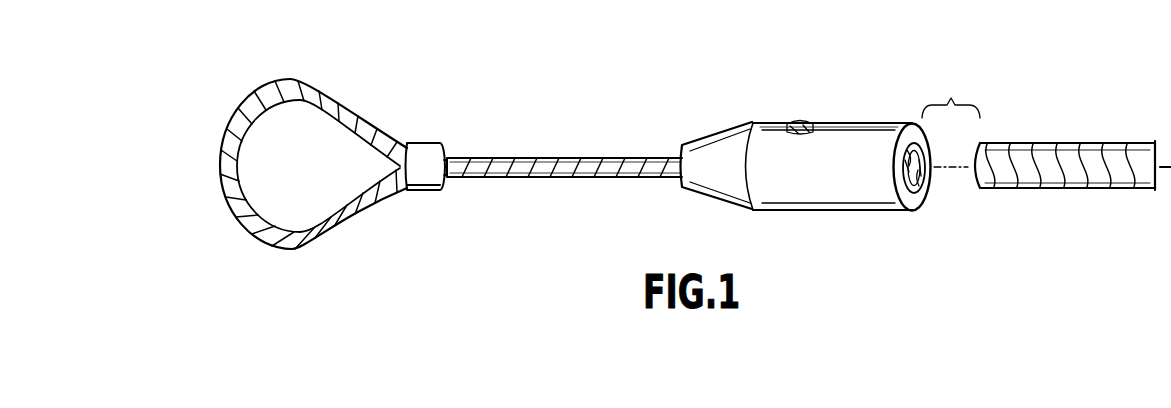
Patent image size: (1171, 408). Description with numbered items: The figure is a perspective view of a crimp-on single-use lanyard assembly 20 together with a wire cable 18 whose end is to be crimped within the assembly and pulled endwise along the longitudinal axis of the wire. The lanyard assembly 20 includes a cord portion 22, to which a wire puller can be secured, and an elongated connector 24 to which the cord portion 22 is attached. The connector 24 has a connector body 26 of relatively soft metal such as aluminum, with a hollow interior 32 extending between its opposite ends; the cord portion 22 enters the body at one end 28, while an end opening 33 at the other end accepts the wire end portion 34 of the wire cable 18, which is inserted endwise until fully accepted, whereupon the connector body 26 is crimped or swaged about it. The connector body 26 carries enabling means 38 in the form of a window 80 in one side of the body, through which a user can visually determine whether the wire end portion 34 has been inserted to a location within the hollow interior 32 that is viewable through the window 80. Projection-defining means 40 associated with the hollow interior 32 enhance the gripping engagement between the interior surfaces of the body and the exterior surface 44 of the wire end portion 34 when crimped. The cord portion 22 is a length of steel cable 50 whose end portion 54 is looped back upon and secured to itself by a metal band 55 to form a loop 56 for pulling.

The wire cable 18 is at (1117, 143).
The lanyard assembly 20 is at (783, 144).
The cord portion 22 is at (508, 157).
The connector 24 is at (873, 210).
The connector body 26 is at (785, 210).
The connector body end 28 is at (682, 187).
The hollow interior 32 is at (925, 192).
The end opening 33 is at (917, 160).
The wire end portion 34 is at (1062, 143).
The enabling means 38 is at (720, 110).
The projection-defining means 40 is at (945, 188).
The exterior surface 44 is at (867, 123).
The steel cable 50 is at (488, 177).
The cable end portion 54 is at (343, 93).
The metal band 55 is at (431, 190).
The loop 56 is at (297, 243).
The window 80 is at (795, 125).